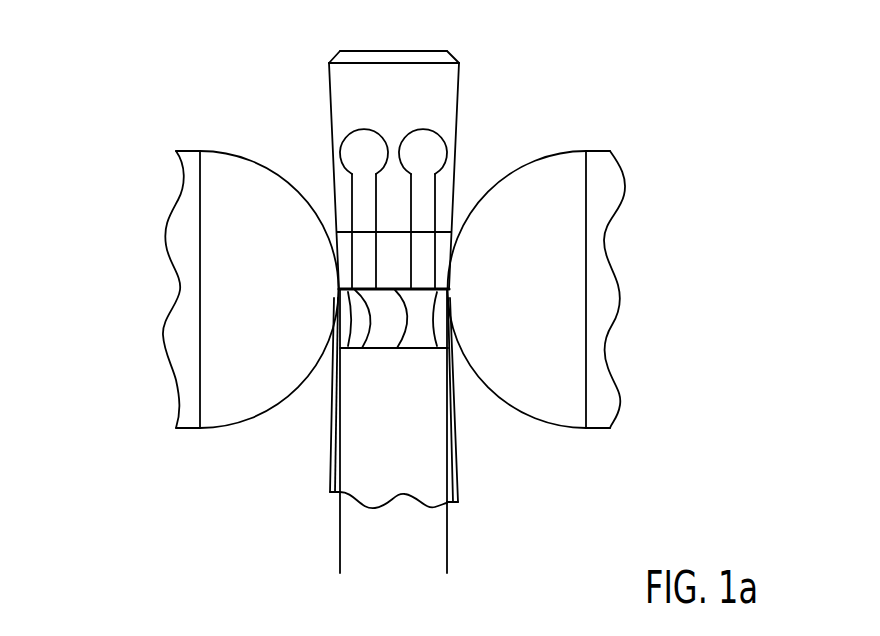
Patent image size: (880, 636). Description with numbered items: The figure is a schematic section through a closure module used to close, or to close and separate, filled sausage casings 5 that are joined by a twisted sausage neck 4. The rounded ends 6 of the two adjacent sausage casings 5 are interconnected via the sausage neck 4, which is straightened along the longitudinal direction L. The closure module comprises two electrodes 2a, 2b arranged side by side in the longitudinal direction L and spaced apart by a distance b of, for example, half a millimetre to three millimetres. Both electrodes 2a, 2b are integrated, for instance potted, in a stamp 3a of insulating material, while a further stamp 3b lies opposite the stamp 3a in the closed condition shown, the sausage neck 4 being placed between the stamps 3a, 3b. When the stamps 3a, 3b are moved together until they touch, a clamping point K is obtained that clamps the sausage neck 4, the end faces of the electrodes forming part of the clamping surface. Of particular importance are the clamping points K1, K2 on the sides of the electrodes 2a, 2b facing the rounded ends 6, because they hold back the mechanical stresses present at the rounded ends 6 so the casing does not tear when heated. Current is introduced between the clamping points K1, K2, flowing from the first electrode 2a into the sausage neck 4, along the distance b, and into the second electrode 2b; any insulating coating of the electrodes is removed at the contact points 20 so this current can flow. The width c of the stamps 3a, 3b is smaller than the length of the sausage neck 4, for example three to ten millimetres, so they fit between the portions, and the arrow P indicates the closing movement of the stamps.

The first electrode 2a is at (353, 148).
The second electrode 2b is at (436, 148).
The stamp 3a is at (415, 72).
The further stamp 3b is at (407, 480).
The sausage neck 4 is at (338, 290).
The filled sausage casing 5 is at (182, 202).
The rounded end 6 is at (264, 172).
The contact point 20 is at (362, 348).
The clamping point K is at (397, 348).
The first clamping point K1 is at (333, 357).
The second clamping point K2 is at (453, 366).
The distance between electrodes b is at (376, 205).
The width of the stamps c is at (340, 568).
The longitudinal direction L is at (165, 282).
The direction of pressing force P is at (650, 218).